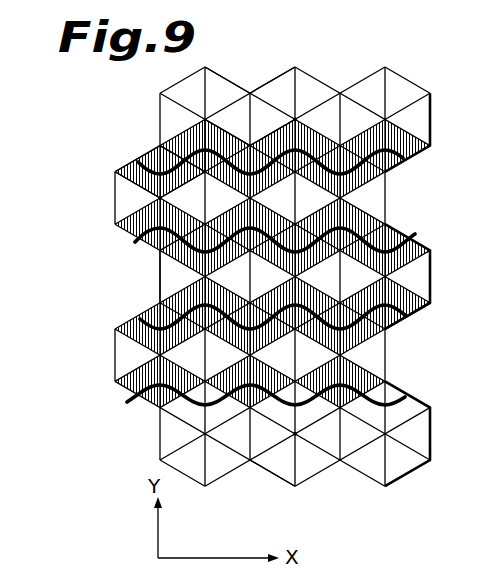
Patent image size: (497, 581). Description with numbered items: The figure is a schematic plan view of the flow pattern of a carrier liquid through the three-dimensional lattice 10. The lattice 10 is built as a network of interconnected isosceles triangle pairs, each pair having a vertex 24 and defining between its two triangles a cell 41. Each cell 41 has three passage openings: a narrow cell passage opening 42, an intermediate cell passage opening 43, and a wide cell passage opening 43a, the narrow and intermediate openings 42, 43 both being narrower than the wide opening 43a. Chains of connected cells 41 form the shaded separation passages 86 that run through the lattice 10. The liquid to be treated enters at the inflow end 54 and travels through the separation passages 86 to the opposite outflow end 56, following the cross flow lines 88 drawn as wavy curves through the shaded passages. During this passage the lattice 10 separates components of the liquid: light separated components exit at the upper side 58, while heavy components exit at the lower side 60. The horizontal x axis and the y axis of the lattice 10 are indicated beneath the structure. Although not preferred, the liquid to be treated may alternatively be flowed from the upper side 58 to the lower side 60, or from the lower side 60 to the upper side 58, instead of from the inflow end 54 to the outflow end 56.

The three-dimensional lattice 10 is at (359, 60).
The vertex 24 is at (157, 201).
The cell 41 is at (170, 150).
The narrow cell passage opening 42 is at (141, 186).
The intermediate cell passage opening 43 is at (203, 134).
The wide cell passage opening 43a is at (168, 145).
The inflow end 54 is at (147, 287).
The outflow end 56 is at (432, 296).
The upper side 58 is at (270, 75).
The lower side 60 is at (271, 473).
The separation passage 86 is at (152, 243).
The cross flow line 88 is at (115, 337).